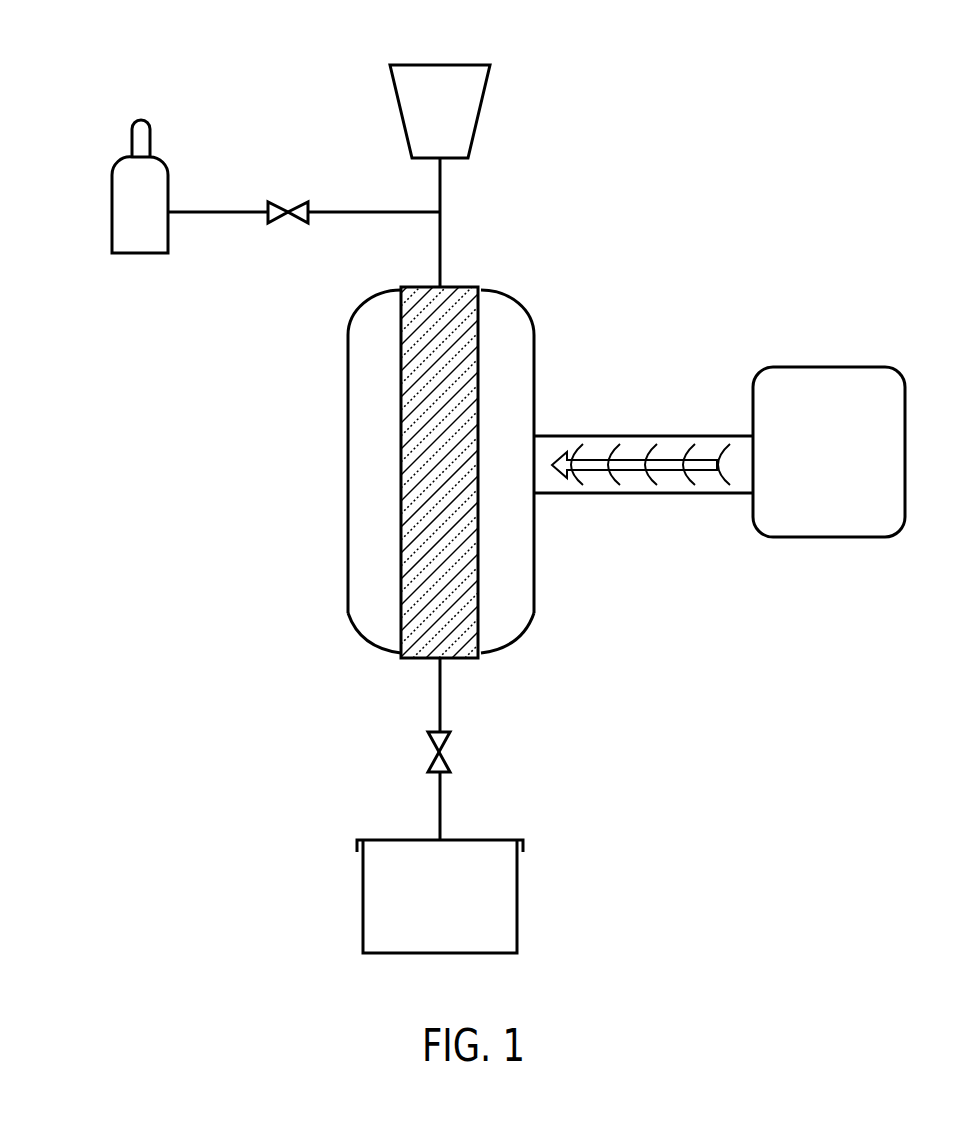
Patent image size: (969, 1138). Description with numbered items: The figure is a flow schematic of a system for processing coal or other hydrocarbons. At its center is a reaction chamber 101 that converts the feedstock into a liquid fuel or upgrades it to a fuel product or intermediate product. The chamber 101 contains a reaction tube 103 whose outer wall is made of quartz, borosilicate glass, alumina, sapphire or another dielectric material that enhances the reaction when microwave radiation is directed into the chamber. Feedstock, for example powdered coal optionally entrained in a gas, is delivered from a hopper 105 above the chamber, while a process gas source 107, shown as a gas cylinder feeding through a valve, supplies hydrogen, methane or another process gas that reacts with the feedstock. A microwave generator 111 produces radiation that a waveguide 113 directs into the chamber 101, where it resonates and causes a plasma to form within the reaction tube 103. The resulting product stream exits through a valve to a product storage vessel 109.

The reaction chamber 101 is at (348, 472).
The reaction tube 103 is at (420, 660).
The feed hopper 105 is at (440, 62).
The process gas source 107 is at (112, 208).
The product storage vessel 109 is at (363, 905).
The microwave generator 111 is at (828, 365).
The waveguide 113 is at (645, 495).